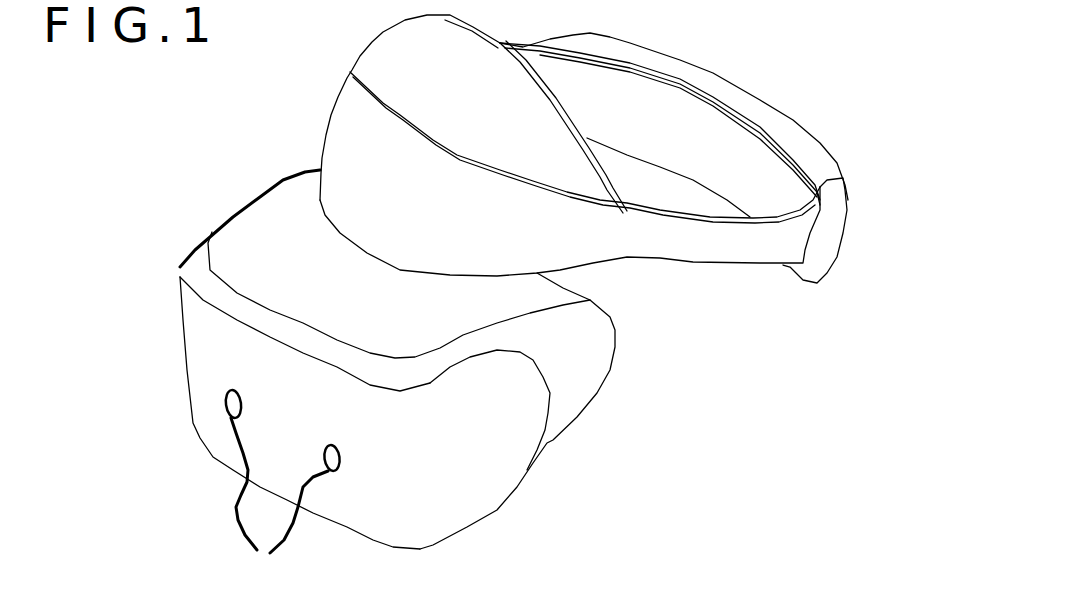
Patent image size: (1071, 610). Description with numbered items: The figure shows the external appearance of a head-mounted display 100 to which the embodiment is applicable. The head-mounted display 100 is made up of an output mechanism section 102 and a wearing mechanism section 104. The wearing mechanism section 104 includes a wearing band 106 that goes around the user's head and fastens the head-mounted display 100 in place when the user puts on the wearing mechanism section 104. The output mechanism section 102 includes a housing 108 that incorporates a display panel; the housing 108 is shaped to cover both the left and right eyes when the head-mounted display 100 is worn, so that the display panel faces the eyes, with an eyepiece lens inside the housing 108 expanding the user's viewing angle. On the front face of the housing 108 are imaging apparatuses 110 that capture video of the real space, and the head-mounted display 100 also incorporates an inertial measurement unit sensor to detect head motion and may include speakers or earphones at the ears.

The head-mounted display 100 is at (281, 100).
The output mechanism section 102 is at (133, 162).
The wearing mechanism section 104 is at (857, 88).
The wearing band 106 is at (711, 262).
The housing 108 is at (497, 510).
The imaging apparatuses 110 is at (282, 492).